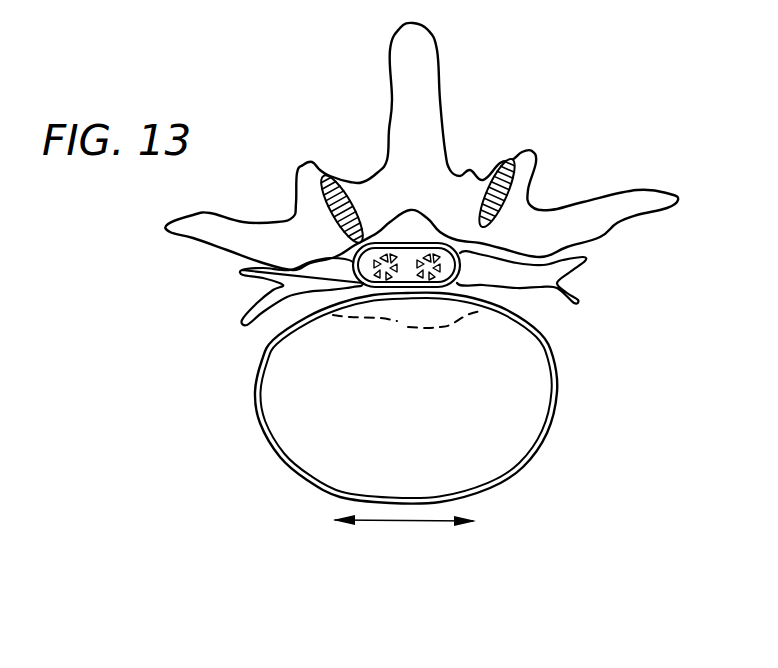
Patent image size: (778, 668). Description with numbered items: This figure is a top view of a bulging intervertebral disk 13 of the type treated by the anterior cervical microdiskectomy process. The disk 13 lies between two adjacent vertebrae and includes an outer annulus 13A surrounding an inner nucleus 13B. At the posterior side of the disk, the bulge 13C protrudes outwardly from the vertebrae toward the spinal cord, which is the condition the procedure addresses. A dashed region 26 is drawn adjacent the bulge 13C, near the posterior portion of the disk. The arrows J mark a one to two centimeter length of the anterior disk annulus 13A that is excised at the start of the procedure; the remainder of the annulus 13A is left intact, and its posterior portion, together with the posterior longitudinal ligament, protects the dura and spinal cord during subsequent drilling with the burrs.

The disk 13 is at (580, 448).
The annulus 13A is at (533, 461).
The nucleus 13B is at (277, 377).
The bulge 13C is at (405, 300).
The implant / dashed region within vertebral body 26 is at (457, 322).
The arrows J is at (400, 520).